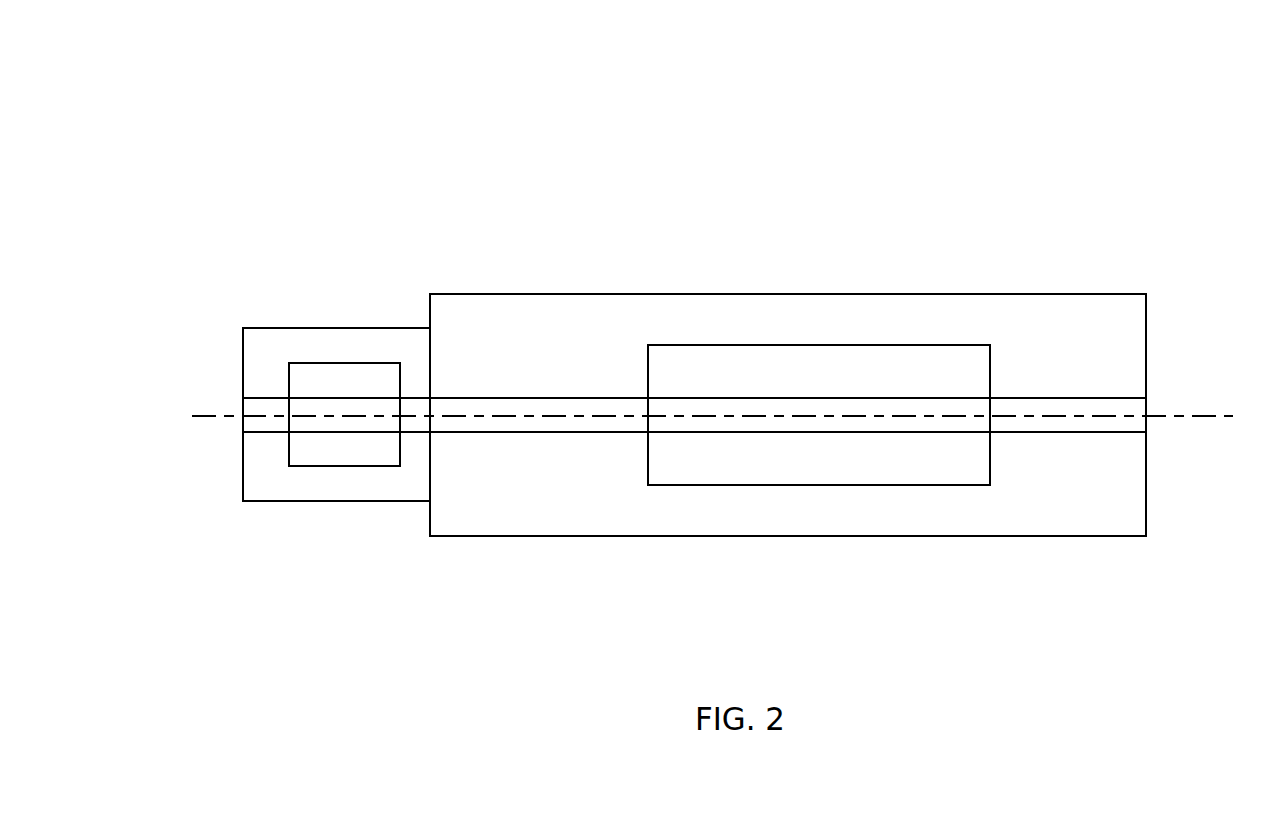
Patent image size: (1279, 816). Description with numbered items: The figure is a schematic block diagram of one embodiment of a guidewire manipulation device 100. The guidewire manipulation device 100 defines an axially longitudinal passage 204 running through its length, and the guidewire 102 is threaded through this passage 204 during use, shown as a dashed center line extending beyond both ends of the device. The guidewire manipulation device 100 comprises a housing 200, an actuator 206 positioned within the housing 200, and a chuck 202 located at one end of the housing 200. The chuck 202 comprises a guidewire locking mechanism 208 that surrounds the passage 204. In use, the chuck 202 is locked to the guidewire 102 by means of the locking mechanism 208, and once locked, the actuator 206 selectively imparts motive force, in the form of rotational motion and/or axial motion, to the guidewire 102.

The guidewire manipulation device 100 is at (807, 136).
The guidewire 102 is at (1205, 418).
The housing 200 is at (557, 293).
The chuck 202 is at (273, 348).
The axially longitudinal passage 204 is at (1143, 407).
The actuator 206 is at (712, 462).
The guidewire locking mechanism 208 is at (335, 450).